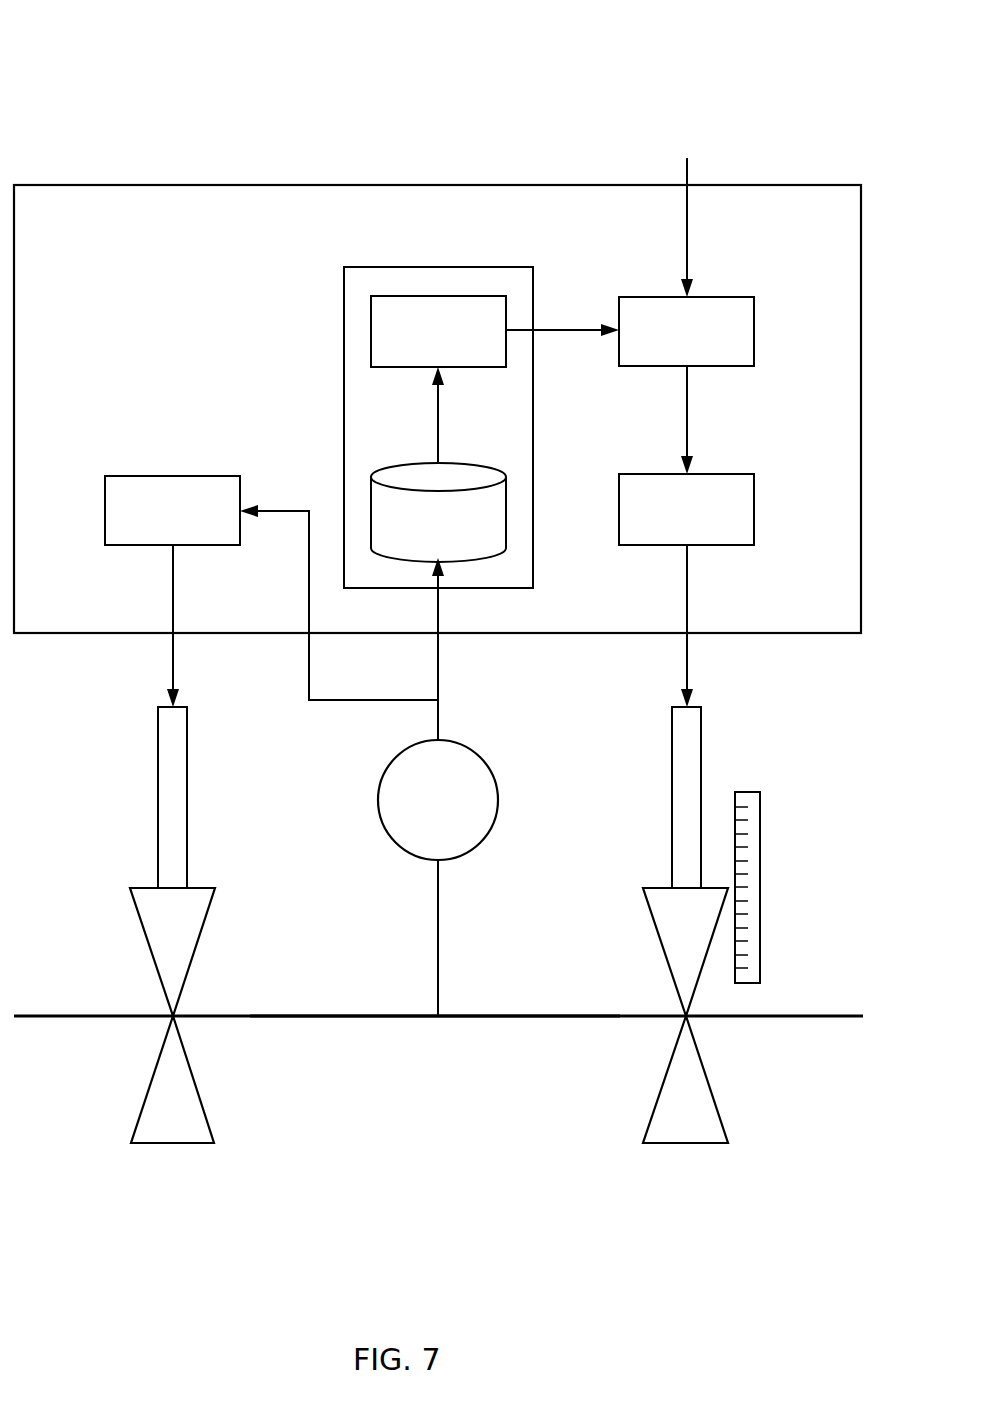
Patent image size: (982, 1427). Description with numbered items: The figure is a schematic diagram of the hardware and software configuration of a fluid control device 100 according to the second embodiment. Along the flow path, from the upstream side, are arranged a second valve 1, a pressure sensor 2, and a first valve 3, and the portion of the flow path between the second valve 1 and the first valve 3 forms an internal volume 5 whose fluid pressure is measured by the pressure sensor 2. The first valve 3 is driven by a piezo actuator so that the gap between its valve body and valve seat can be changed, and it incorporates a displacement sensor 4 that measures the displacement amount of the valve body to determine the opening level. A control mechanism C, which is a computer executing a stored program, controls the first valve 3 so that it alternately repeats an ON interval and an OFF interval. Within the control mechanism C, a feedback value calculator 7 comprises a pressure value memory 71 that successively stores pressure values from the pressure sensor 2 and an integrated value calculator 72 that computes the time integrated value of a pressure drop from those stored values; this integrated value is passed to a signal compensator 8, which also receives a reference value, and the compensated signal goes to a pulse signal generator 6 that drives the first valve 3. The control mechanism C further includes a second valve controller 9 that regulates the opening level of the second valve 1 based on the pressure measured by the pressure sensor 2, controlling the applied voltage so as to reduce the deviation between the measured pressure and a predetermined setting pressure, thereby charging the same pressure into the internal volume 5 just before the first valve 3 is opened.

The fluid control device 100 is at (150, 92).
The control mechanism C is at (427, 185).
The second valve 1 is at (126, 838).
The pressure sensor 2 is at (478, 746).
The first valve 3 is at (644, 756).
The displacement sensor 4 is at (745, 792).
The internal volume 5 is at (378, 1045).
The pulse signal generator 6 is at (754, 508).
The feedback value calculator 7 is at (344, 428).
The pressure value memory 71 is at (371, 512).
The integrated value calculator 72 is at (371, 330).
The signal compensator 8 is at (754, 330).
The second valve controller 9 is at (173, 476).